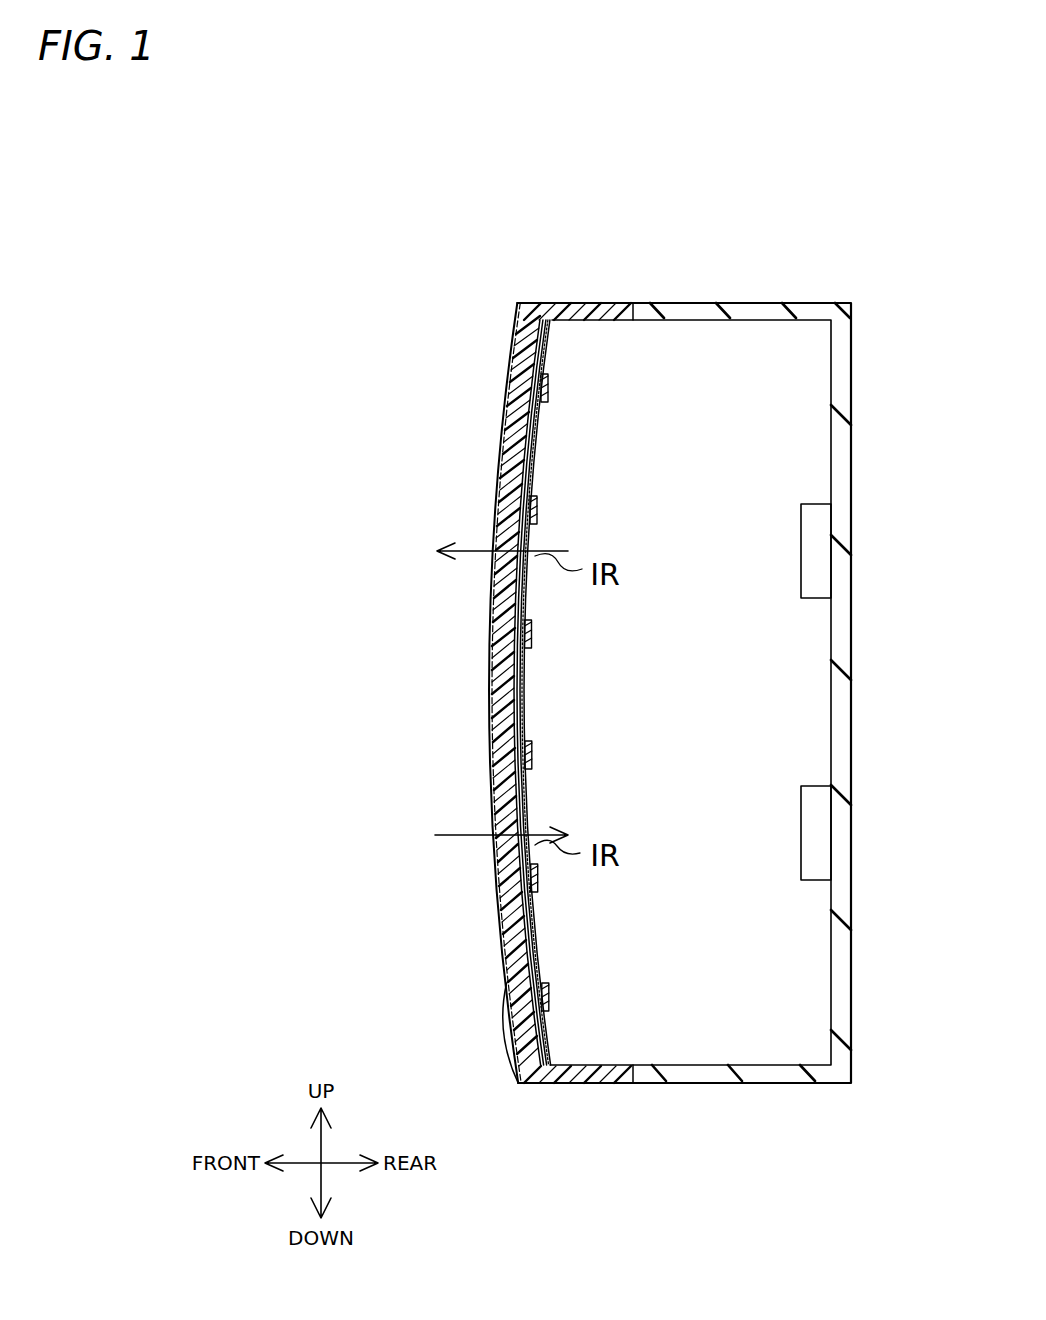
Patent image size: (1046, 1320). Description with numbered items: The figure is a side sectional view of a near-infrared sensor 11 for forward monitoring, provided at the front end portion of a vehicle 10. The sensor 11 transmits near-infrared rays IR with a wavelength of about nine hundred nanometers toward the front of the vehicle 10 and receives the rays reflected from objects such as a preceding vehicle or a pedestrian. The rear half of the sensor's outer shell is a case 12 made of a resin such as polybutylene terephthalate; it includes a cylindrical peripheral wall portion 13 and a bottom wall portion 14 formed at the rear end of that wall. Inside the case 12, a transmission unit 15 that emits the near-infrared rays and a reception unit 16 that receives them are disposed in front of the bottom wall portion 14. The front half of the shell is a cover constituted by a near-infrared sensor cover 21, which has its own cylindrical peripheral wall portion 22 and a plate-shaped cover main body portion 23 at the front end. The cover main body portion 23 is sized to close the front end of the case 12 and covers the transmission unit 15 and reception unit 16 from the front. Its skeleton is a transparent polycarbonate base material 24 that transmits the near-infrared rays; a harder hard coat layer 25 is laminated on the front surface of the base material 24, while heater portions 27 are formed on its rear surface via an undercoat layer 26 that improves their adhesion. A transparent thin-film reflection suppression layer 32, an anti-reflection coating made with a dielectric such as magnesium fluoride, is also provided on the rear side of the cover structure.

The vehicle 10 is at (672, 185).
The near-infrared sensor 11 is at (819, 1122).
The case 12 is at (758, 630).
The peripheral wall portion 13 is at (773, 308).
The bottom wall portion 14 is at (853, 643).
The transmission unit 15 is at (803, 555).
The reception unit 16 is at (803, 840).
The near-infrared sensor cover 21 is at (565, 757).
The peripheral wall portion 22 is at (597, 1077).
The cover main body portion 23 is at (507, 1070).
The base material 24 is at (502, 645).
The hard coat layer 25 is at (492, 601).
The undercoat layer 26 is at (514, 348).
The heater portions 27 is at (538, 510).
The reflection suppression layer 32 is at (525, 705).